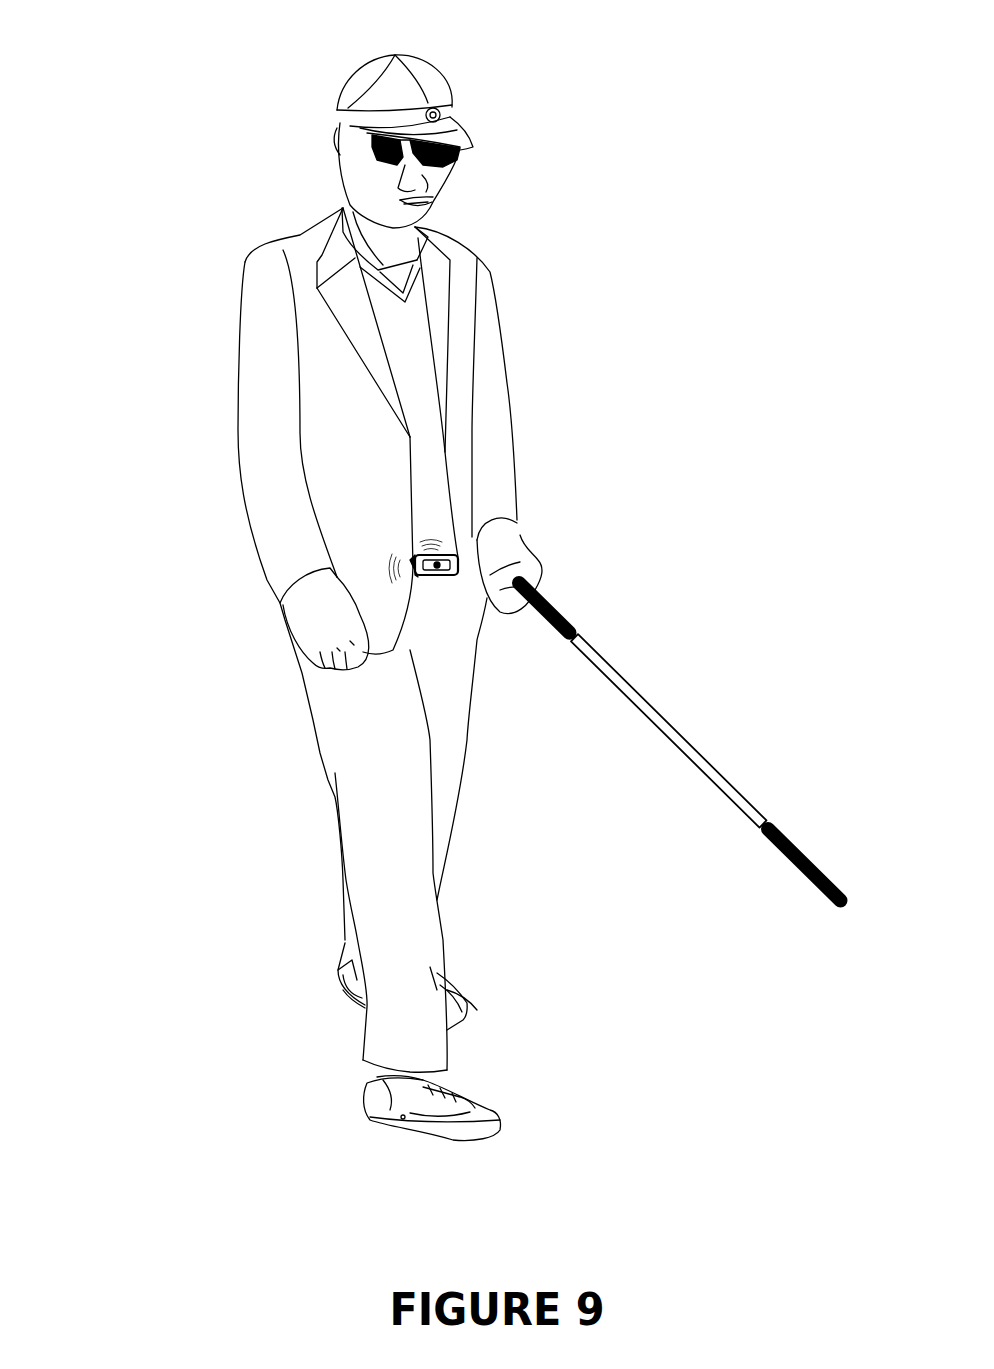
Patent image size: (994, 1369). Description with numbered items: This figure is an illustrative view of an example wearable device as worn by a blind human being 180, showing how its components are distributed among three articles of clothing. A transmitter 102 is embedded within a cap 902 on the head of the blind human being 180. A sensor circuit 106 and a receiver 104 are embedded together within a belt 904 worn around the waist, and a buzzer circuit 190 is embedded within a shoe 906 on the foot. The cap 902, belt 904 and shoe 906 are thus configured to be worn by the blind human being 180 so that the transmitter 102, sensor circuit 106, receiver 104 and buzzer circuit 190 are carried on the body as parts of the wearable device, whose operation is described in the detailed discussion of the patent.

The cap 902 is at (430, 65).
The transmitter 102 is at (453, 113).
The blind human being 180 is at (418, 574).
The sensor circuit 106 is at (458, 568).
The receiver 104 is at (577, 558).
The belt 904 is at (428, 578).
The buzzer circuit 190 is at (343, 990).
The shoe 906 is at (470, 1008).